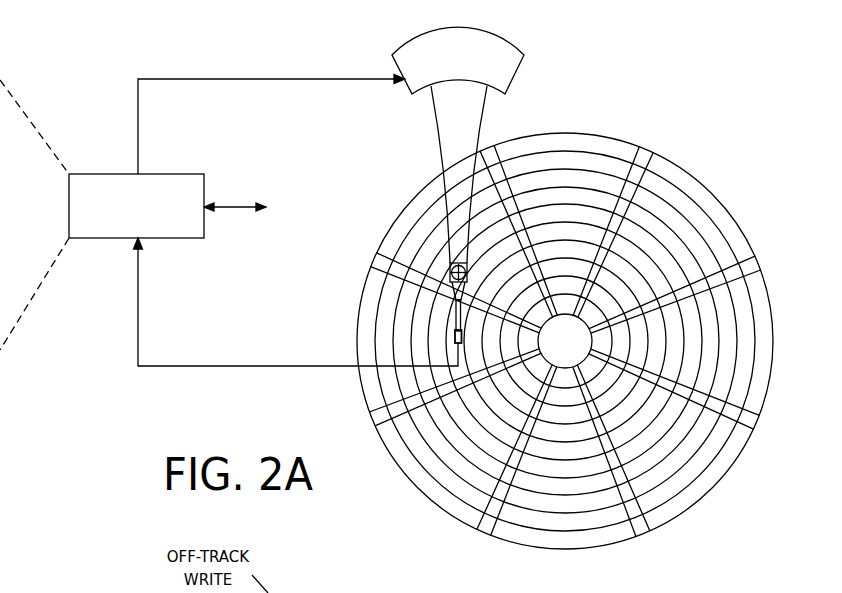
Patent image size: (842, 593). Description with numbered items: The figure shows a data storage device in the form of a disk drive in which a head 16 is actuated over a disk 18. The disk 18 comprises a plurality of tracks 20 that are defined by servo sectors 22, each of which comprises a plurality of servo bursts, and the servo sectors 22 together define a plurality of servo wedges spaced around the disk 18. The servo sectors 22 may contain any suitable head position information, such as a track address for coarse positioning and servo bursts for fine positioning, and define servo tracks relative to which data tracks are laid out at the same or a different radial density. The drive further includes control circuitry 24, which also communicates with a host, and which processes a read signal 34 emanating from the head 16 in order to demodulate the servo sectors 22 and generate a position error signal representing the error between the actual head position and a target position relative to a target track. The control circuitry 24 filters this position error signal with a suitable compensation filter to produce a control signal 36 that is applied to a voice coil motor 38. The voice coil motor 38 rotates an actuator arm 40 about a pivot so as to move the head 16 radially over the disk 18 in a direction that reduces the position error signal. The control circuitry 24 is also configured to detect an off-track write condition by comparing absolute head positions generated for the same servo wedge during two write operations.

The head 16 is at (444, 332).
The disk 18 is at (566, 335).
The tracks 20 is at (565, 160).
The servo sectors 22 is at (566, 345).
The control circuitry 24 is at (172, 174).
The read signal 34 is at (223, 366).
The control signal 36 is at (138, 122).
The voice coil motor (VCM) 38 is at (411, 93).
The actuator arm 40 is at (443, 158).